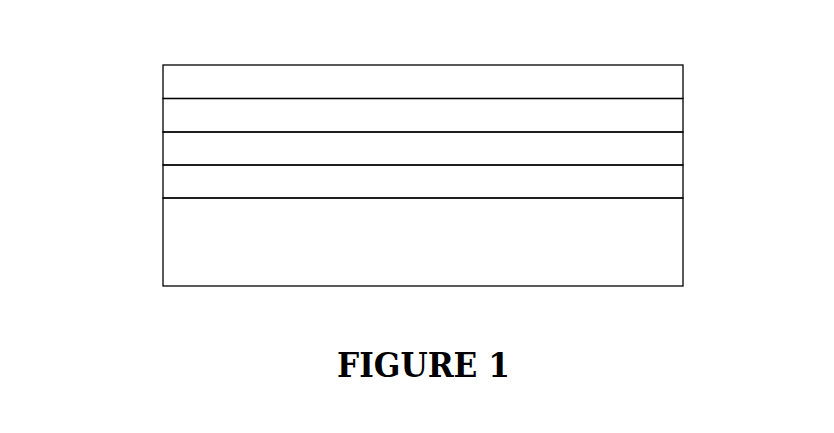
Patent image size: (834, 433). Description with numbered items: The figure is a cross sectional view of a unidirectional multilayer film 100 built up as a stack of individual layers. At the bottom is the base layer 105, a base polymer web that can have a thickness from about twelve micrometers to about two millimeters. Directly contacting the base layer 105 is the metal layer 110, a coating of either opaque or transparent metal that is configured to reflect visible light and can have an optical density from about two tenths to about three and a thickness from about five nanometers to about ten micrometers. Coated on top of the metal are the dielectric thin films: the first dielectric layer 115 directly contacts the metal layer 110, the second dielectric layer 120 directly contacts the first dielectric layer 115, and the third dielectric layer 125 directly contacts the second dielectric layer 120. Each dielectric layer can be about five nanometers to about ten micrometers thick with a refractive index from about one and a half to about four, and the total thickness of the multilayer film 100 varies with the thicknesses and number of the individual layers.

The multilayer film 100 is at (138, 57).
The base layer 105 is at (683, 237).
The metal layer 110 is at (683, 185).
The first dielectric layer 115 is at (683, 153).
The second dielectric layer 120 is at (683, 116).
The third dielectric layer 125 is at (683, 80).